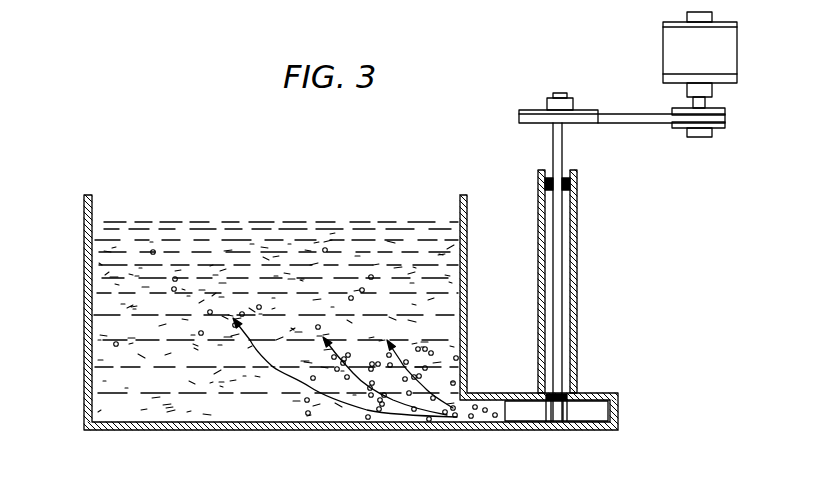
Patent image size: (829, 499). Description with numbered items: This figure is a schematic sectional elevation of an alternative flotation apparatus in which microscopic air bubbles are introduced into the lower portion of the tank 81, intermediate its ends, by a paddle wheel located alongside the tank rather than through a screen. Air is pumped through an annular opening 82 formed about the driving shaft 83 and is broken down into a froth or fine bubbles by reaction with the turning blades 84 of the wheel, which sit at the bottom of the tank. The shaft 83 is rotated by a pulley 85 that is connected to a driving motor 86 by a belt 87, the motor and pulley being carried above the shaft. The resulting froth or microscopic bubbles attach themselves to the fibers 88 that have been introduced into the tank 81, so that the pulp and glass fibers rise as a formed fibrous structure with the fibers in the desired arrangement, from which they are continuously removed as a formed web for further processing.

The tank 81 is at (84, 374).
The annular opening 82 is at (548, 168).
The driving shaft 83 is at (558, 276).
The turning blades 84 is at (590, 413).
The pulley 85 is at (527, 110).
The driving motor 86 is at (742, 55).
The belt 87 is at (642, 123).
The fibers 88 is at (148, 240).